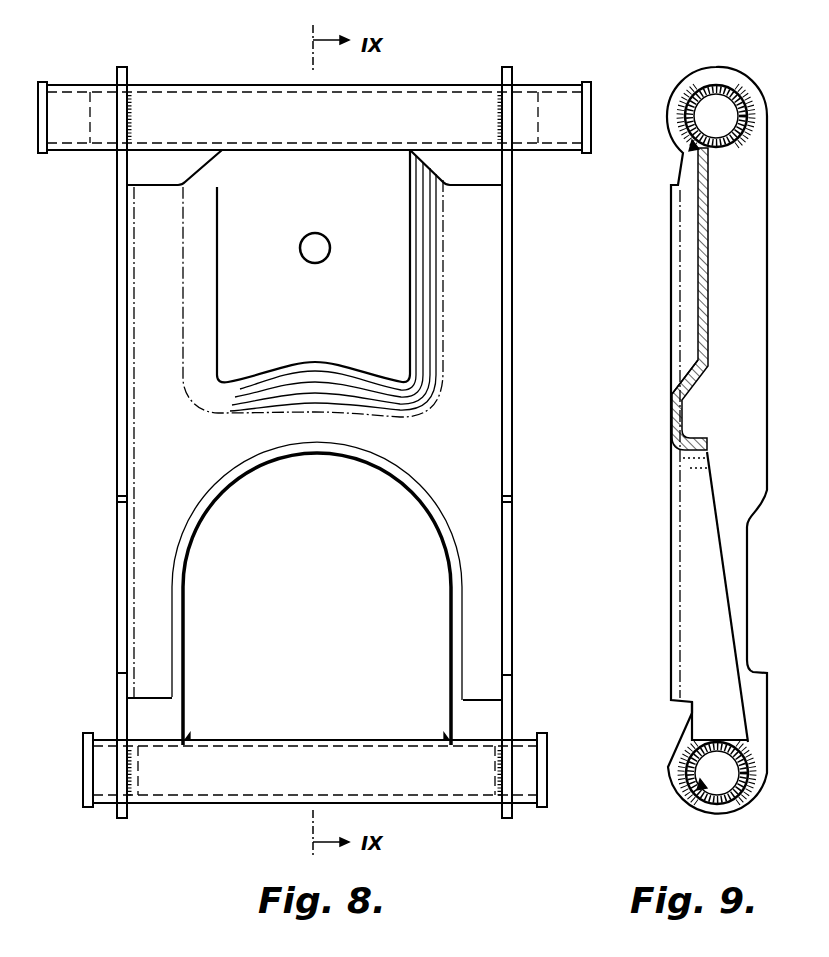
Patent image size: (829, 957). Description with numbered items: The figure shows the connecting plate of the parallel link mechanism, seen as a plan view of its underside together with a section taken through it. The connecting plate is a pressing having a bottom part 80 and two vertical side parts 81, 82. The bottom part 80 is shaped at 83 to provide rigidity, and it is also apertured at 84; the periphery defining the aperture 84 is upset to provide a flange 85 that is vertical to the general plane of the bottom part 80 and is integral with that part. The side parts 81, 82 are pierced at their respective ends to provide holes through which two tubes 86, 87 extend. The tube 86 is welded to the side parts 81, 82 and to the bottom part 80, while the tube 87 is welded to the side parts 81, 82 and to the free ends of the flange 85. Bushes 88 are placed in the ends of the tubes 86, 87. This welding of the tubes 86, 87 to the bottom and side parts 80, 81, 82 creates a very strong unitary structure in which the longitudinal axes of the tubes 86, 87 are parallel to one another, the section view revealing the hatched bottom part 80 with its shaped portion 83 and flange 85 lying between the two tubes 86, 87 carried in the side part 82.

In FIG. 8, the bottom part 80 is at (484, 432).
In FIG. 9, the bottom part 80 is at (702, 322).
In FIG. 8, the vertical side part 81 is at (117, 368).
In FIG. 8, the vertical side part 82 is at (512, 352).
In FIG. 9, the vertical side part 82 is at (730, 282).
In FIG. 8, the shaped portion 83 is at (423, 277).
In FIG. 9, the shaped portion 83 is at (682, 369).
In FIG. 8, the aperture 84 is at (442, 612).
In FIG. 8, the flange 85 is at (192, 520).
In FIG. 9, the flange 85 is at (700, 440).
In FIG. 8, the tube 86 is at (465, 98).
In FIG. 9, the tube 86 is at (707, 87).
In FIG. 8, the tube 87 is at (360, 750).
In FIG. 9, the tube 87 is at (720, 800).
In FIG. 8, the bush 88 is at (43, 153).
In FIG. 9, the bush 88 is at (691, 140).